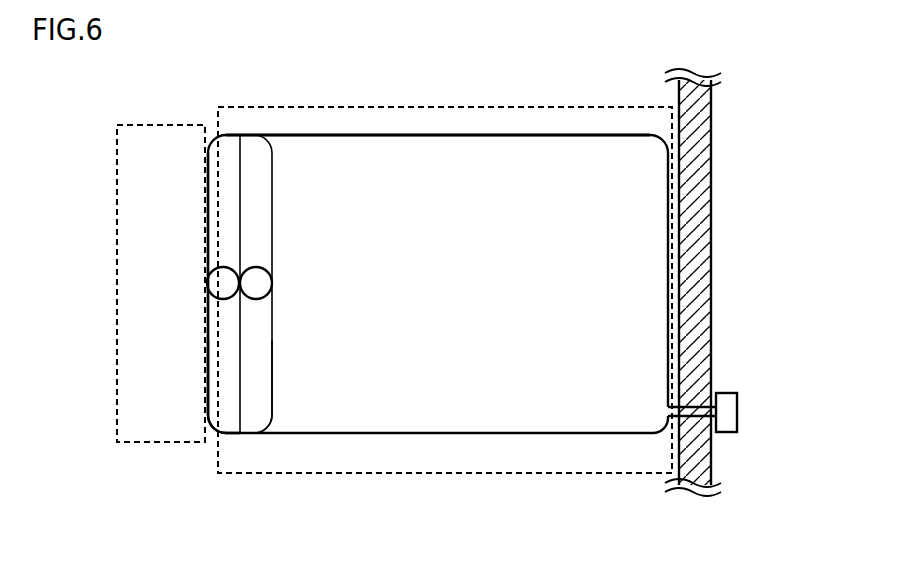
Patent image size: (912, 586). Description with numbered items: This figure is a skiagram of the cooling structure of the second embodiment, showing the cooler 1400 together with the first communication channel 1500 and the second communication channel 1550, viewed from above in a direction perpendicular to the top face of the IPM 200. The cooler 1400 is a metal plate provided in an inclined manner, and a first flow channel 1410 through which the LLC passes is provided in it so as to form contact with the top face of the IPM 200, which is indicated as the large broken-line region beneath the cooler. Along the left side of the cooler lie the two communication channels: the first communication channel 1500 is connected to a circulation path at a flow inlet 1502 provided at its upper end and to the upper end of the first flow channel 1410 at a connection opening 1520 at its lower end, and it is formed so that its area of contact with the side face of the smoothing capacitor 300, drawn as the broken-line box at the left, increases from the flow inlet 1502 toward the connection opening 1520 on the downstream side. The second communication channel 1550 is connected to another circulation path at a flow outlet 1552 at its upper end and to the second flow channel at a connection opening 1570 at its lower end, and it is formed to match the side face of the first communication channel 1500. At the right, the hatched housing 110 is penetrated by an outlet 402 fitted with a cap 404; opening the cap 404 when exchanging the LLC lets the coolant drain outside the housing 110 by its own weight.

The housing 110 is at (712, 108).
The IPM 200 is at (561, 473).
The smoothing capacitor 300 is at (152, 443).
The outlet 402 is at (688, 406).
The cap 404 is at (738, 405).
The cooler 1400 is at (445, 130).
The first flow channel 1410 is at (551, 135).
The first communication channel 1500 is at (208, 370).
The flow inlet 1502 is at (216, 275).
The connection opening 1520 is at (224, 222).
The second communication channel 1550 is at (272, 368).
The flow outlet 1552 is at (266, 270).
The connection opening 1570 is at (258, 225).